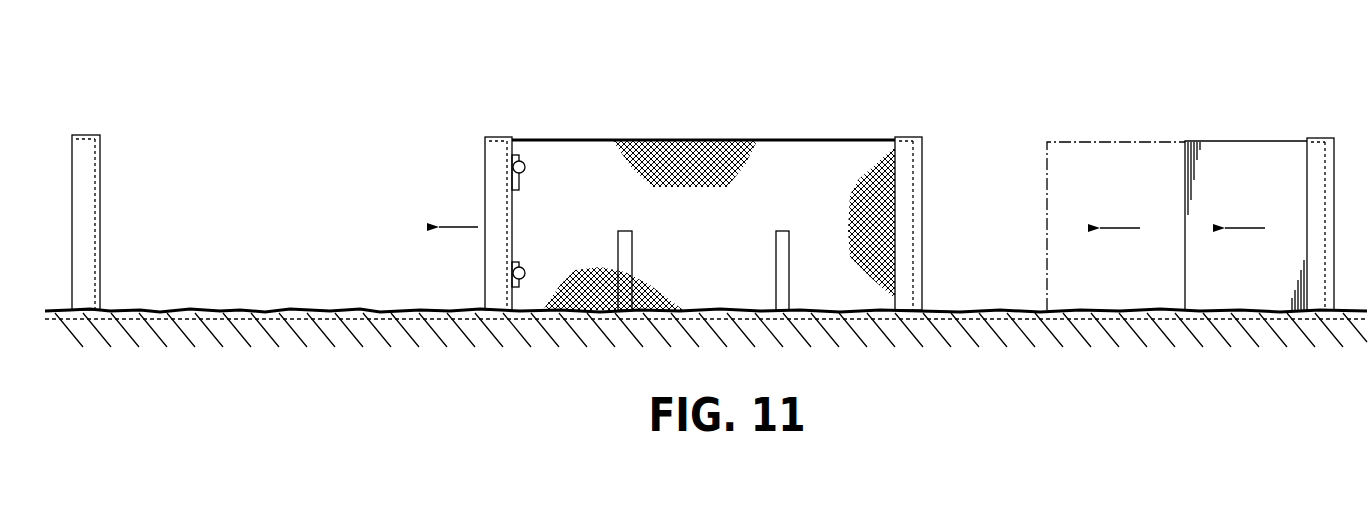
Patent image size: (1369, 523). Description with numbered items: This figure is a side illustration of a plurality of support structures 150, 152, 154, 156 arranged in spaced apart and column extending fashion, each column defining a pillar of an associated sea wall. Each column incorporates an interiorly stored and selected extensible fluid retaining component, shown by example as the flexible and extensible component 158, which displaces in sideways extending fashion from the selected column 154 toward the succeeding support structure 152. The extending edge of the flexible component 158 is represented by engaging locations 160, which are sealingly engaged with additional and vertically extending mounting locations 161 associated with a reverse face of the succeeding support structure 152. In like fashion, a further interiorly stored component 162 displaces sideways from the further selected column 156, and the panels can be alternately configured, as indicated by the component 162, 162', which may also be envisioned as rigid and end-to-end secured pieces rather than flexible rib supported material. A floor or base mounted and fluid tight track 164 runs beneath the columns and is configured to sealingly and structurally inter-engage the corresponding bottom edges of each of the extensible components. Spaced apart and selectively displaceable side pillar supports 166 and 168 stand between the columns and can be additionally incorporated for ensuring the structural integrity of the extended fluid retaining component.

The support structure 150 is at (84, 135).
The support structure 152 is at (497, 137).
The support structure 154 is at (905, 137).
The support structure 156 is at (1320, 138).
The extensible fluid retaining component 158 is at (688, 140).
The engaging locations 160 is at (522, 166).
The mounting locations 161 is at (512, 192).
The interiorly stored component 162 is at (1246, 190).
The interiorly stored component 162' is at (1116, 188).
The fluid tight track 164 is at (310, 320).
The side pillar support 166 is at (625, 231).
The side pillar support 168 is at (783, 231).